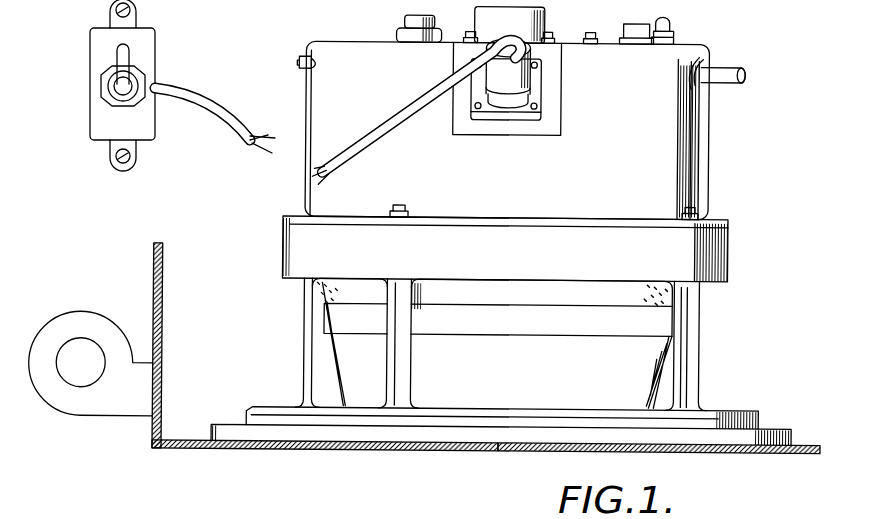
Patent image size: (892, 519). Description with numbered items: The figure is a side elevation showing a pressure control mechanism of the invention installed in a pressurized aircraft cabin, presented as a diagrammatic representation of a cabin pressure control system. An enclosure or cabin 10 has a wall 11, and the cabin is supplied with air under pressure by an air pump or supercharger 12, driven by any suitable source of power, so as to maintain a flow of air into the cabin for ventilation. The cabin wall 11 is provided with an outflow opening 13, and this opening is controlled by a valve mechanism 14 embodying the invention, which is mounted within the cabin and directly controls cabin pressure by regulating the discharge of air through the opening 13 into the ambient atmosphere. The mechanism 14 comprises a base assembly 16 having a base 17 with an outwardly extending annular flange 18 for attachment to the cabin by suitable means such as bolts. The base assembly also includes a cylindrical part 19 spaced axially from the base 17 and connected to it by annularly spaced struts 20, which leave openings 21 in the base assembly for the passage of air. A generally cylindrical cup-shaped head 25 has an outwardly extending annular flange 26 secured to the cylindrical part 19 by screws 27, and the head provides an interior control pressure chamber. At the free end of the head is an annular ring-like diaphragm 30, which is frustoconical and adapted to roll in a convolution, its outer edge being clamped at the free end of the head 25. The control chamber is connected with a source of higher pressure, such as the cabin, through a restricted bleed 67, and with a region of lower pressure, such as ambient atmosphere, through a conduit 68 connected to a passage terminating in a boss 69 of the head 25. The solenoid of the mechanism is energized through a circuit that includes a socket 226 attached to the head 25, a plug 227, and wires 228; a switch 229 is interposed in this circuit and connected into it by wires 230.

The cabin 10 is at (776, 312).
The wall 11 is at (808, 452).
The air pump or supercharger 12 is at (92, 318).
The outflow opening 13 is at (352, 449).
The valve mechanism 14 is at (736, 192).
The base assembly 16 is at (731, 272).
The base 17 is at (737, 413).
The annular flange 18 is at (770, 432).
The cylindrical part 19 is at (715, 245).
The struts 20 is at (312, 362).
The openings 21 is at (677, 338).
The cup-shaped head 25 is at (690, 136).
The annular flange 26 is at (735, 222).
The screws 27 is at (684, 210).
The diaphragm 30 is at (660, 300).
The restricted bleed 67 is at (628, 22).
The conduit 68 is at (735, 65).
The boss 69 is at (706, 56).
The socket 226 is at (520, 89).
The plug 227 is at (528, 75).
The wires 228 is at (330, 174).
The switch 229 is at (147, 44).
The wires 230 is at (258, 146).